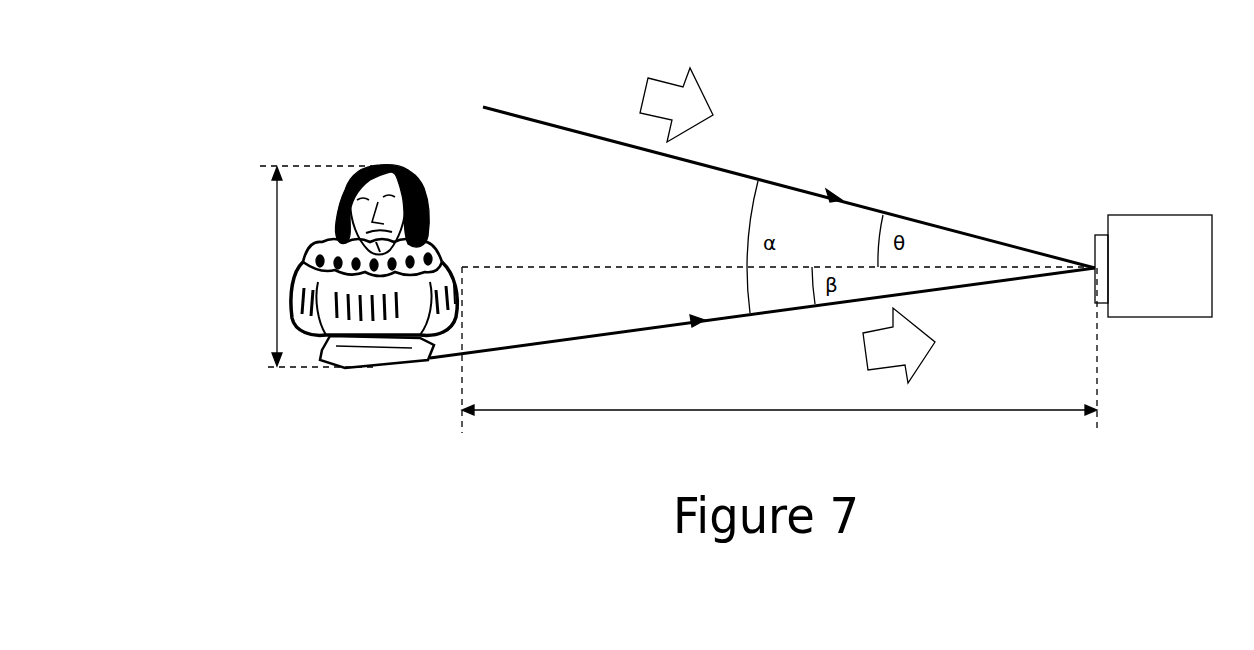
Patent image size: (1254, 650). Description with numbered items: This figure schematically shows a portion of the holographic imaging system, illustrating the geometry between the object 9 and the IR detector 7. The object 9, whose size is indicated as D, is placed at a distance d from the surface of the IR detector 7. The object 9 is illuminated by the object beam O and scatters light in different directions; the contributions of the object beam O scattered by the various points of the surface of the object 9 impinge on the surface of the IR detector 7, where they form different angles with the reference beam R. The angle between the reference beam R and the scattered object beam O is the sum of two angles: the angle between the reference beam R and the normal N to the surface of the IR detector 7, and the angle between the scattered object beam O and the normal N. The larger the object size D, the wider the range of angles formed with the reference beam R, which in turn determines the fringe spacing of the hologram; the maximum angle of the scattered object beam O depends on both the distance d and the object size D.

The IR detector 7 is at (1160, 215).
The object 9 is at (374, 367).
The normal N is at (537, 265).
The object size D is at (320, 266).
The distance d is at (779, 350).
The reference beam R is at (660, 80).
The object beam O is at (925, 355).